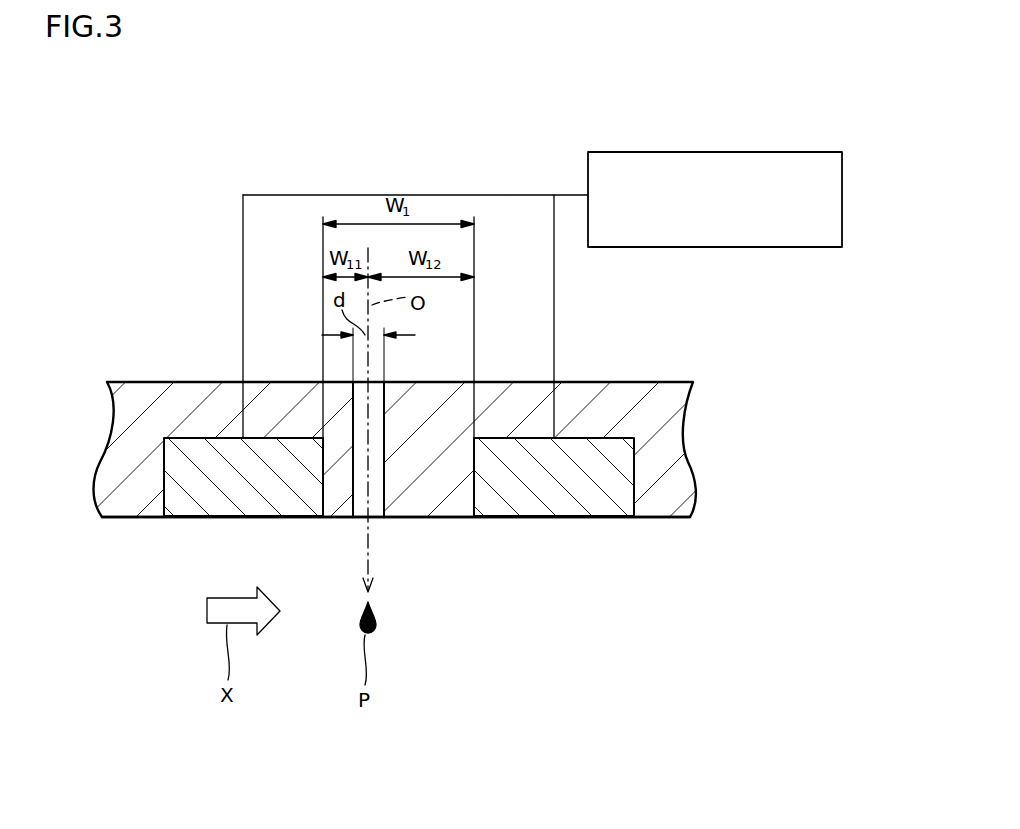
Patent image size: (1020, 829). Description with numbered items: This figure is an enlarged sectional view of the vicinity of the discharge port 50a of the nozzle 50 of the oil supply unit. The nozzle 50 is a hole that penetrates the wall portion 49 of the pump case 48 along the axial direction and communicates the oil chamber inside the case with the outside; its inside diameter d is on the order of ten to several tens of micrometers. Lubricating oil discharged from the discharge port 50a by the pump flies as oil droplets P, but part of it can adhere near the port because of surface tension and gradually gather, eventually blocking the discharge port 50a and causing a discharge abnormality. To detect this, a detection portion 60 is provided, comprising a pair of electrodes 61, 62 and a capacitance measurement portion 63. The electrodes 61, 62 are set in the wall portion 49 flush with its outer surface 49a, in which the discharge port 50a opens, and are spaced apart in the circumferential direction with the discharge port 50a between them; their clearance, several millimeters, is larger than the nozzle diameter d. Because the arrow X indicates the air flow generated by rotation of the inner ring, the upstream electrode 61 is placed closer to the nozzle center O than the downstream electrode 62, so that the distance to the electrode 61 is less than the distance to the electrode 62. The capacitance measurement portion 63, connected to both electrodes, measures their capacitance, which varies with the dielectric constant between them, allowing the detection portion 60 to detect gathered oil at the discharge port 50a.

The pump case 48 is at (652, 517).
The wall portion 49 is at (125, 412).
The outer surface 49a is at (150, 518).
The nozzle 50 is at (378, 425).
The discharge port 50a is at (380, 518).
The detection portion 60 is at (469, 311).
The electrode 61 is at (218, 495).
The electrode 62 is at (578, 497).
The capacitance measurement portion 63 is at (677, 151).